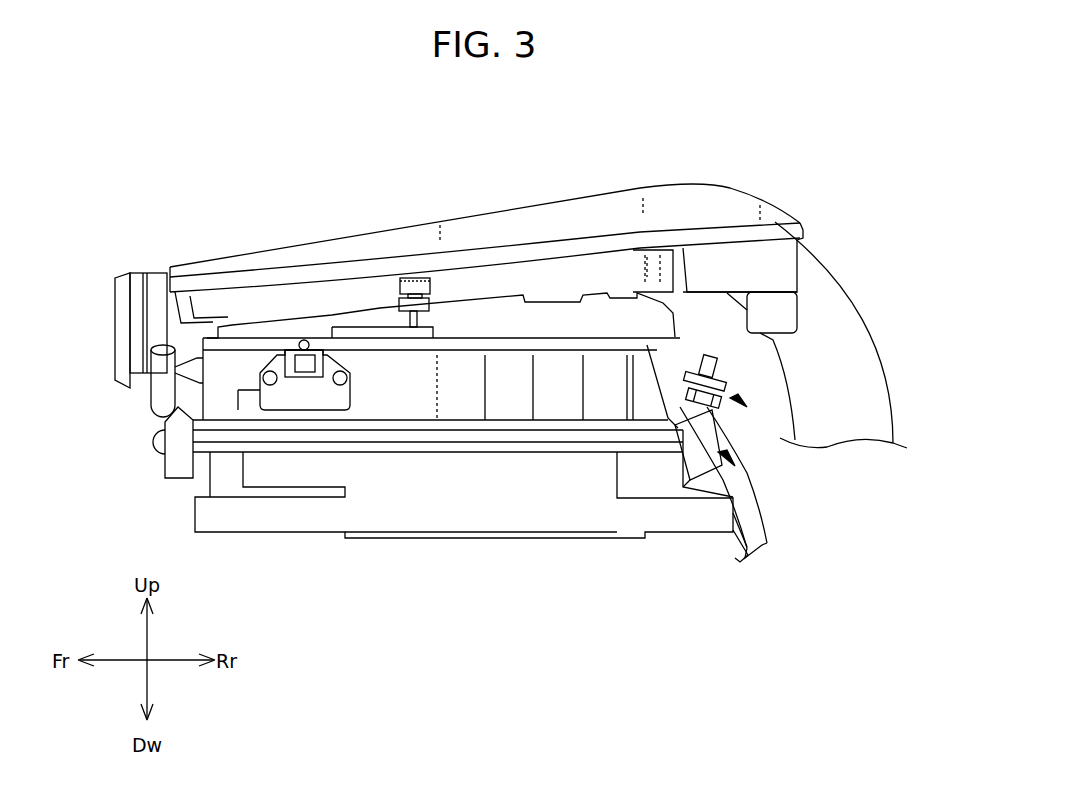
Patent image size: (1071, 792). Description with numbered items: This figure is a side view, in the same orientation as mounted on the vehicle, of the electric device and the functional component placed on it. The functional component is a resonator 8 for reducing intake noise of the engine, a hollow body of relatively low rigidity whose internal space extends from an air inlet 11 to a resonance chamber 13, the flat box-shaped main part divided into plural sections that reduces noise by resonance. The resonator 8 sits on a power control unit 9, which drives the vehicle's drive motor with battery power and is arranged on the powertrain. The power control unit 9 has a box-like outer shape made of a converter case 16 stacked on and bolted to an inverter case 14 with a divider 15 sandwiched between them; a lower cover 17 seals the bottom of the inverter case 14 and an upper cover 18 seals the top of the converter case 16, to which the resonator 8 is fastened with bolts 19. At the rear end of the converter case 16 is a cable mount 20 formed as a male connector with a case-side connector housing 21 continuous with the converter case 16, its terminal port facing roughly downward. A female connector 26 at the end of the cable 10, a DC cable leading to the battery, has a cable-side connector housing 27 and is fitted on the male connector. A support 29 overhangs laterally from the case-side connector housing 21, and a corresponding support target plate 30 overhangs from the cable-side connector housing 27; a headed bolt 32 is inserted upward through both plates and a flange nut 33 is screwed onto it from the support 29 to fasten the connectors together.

The resonator 8 is at (510, 182).
The power control unit (PCU) 9 is at (557, 343).
The cable 10 is at (733, 540).
The air inlet 11 is at (113, 290).
The resonance chamber 13 is at (360, 243).
The inverter case 14 is at (203, 480).
The divider 15 is at (265, 436).
The converter case 16 is at (227, 390).
The lower cover 17 is at (454, 538).
The upper cover 18 is at (322, 320).
The bolts 19 is at (413, 277).
The cable mount 20 is at (743, 405).
The case-side connector housing 21 is at (693, 357).
The female connector 26 is at (757, 540).
The cable-side connector housing 27 is at (723, 440).
The support 29 is at (718, 376).
The support target plate 30 is at (722, 386).
The headed bolt 32 is at (740, 450).
The flange nut 33 is at (712, 363).